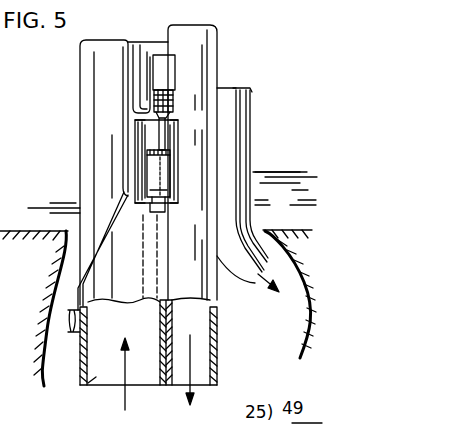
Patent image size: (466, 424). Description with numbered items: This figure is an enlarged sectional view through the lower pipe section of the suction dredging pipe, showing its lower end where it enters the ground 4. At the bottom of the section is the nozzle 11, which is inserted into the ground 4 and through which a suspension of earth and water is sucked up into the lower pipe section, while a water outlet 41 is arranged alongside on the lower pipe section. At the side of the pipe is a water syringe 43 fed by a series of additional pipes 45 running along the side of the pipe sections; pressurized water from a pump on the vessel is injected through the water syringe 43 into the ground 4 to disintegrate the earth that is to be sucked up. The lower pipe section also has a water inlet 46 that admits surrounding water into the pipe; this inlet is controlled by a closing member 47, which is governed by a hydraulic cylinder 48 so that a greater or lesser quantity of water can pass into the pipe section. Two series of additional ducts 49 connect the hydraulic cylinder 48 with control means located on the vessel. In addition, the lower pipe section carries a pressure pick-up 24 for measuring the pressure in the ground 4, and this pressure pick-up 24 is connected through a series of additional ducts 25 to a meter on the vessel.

The ground 4 is at (288, 228).
The nozzle 11 is at (95, 380).
The pressure pick-up 24 is at (74, 338).
The additional ducts 25 is at (120, 50).
The water outlet 41 is at (212, 387).
The water syringe 43 is at (250, 284).
The additional pipes 45 is at (238, 88).
The water inlet 46 is at (169, 204).
The closing member 47 is at (158, 176).
The hydraulic cylinder 48 is at (167, 80).
The additional ducts 49 is at (152, 55).